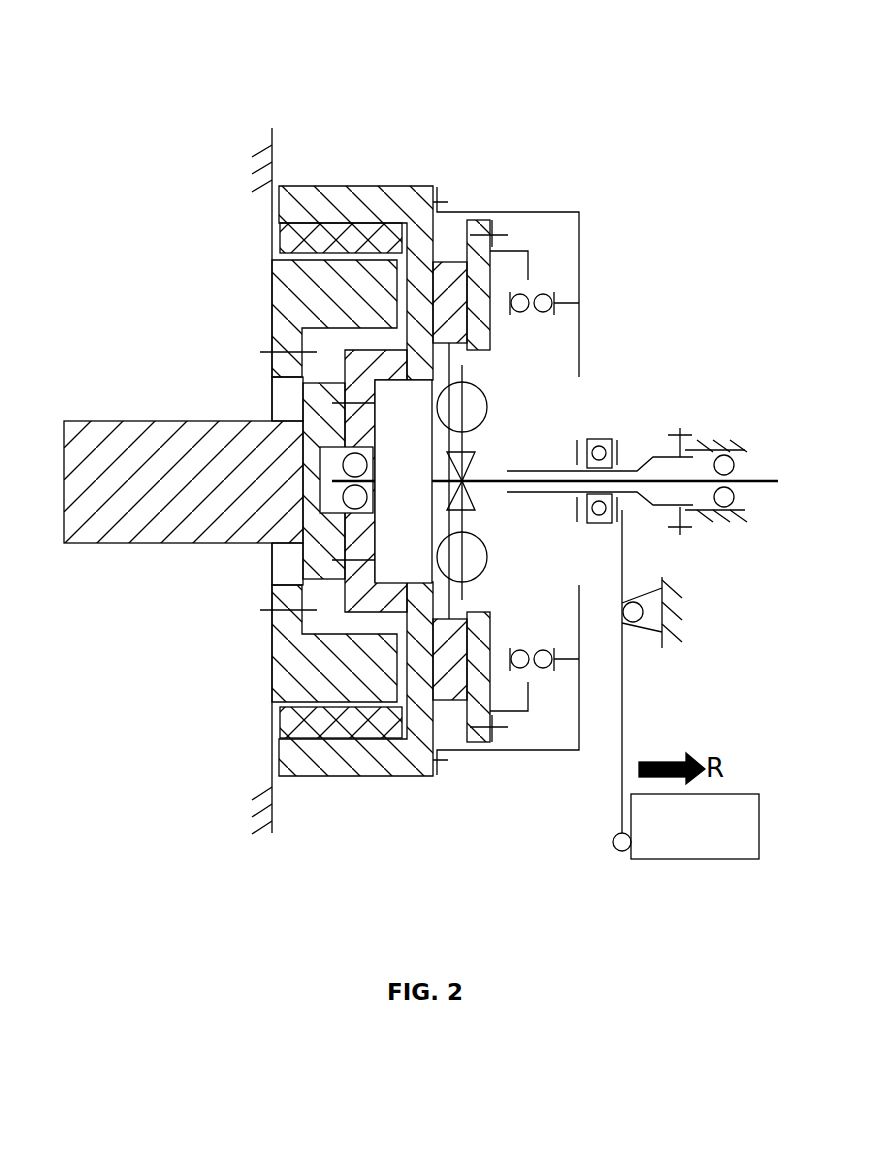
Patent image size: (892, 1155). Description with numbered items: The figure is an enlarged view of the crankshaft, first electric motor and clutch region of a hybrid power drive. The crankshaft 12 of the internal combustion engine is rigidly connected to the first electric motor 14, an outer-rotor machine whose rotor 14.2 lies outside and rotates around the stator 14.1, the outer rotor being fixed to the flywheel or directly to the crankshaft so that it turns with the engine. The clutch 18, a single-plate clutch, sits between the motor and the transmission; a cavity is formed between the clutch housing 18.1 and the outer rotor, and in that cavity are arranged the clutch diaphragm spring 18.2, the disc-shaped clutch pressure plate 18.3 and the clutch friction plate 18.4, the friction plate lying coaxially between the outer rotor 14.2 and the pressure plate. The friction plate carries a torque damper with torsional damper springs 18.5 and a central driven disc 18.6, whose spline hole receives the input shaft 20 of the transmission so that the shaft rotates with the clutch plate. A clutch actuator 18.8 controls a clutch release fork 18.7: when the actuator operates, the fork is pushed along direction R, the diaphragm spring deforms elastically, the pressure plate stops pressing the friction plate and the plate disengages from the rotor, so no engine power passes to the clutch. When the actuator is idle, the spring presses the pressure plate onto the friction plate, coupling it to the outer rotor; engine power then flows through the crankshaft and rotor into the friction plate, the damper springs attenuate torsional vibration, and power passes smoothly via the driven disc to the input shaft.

The crankshaft 12 is at (110, 418).
The first electric motor 14 is at (330, 125).
The stator 14.1 is at (288, 305).
The rotor 14.2 is at (378, 210).
The clutch 18 is at (710, 365).
The clutch housing 18.1 is at (582, 237).
The clutch diaphragm spring 18.2 is at (578, 445).
The clutch pressure plate 18.3 is at (482, 227).
The clutch friction plate 18.4 is at (442, 275).
The torsional damper springs 18.5 is at (437, 420).
The driven disc 18.6 is at (462, 481).
The clutch release fork 18.7 is at (622, 708).
The clutch actuator 18.8 is at (727, 858).
The input shaft 20 is at (770, 478).